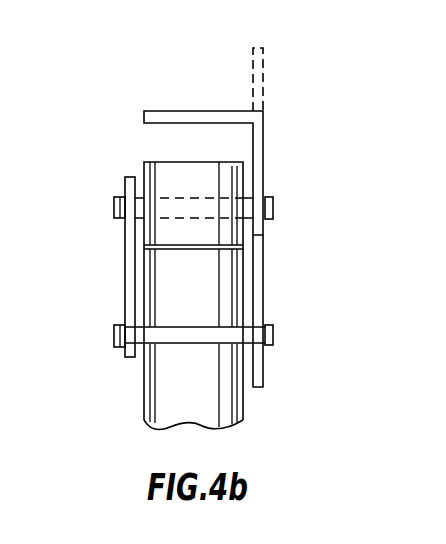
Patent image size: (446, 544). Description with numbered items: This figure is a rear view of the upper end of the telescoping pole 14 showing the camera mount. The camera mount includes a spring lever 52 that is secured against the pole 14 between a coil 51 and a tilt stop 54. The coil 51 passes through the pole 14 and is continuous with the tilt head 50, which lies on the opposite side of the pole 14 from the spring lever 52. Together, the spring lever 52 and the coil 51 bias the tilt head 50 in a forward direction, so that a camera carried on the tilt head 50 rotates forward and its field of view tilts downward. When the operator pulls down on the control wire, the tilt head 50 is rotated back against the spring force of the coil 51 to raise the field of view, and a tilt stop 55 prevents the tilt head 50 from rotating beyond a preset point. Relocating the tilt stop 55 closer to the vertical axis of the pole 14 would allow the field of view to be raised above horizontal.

The pole 14 is at (227, 410).
The tilt head 50 is at (167, 117).
The coil 51 is at (273, 208).
The spring lever 52 is at (125, 303).
The tilt stop 54 is at (220, 109).
The tilt stop 55 is at (273, 335).